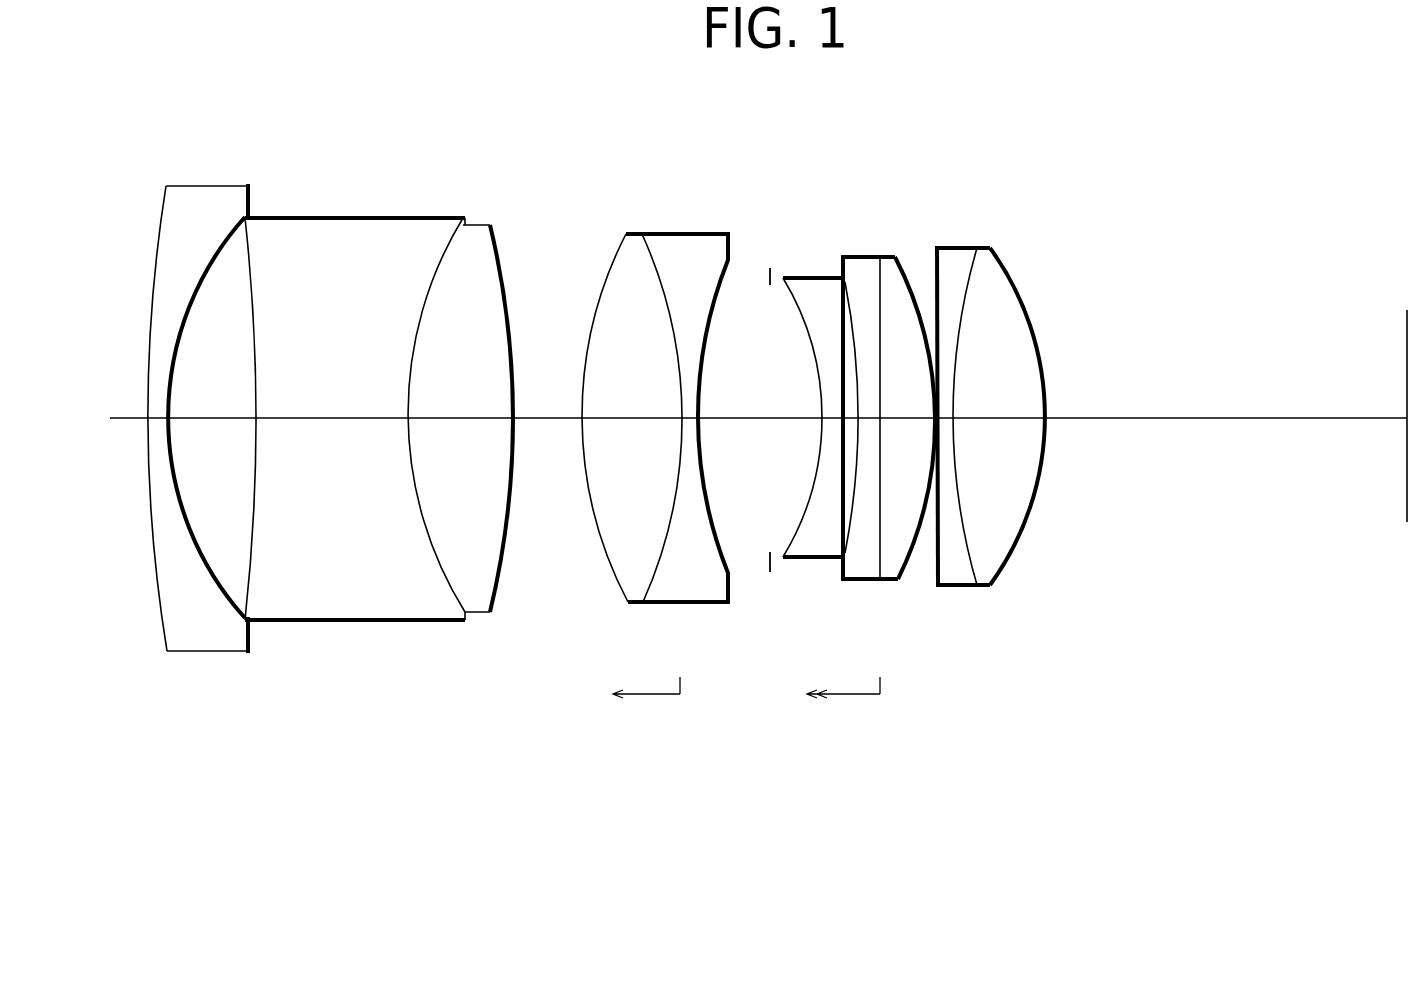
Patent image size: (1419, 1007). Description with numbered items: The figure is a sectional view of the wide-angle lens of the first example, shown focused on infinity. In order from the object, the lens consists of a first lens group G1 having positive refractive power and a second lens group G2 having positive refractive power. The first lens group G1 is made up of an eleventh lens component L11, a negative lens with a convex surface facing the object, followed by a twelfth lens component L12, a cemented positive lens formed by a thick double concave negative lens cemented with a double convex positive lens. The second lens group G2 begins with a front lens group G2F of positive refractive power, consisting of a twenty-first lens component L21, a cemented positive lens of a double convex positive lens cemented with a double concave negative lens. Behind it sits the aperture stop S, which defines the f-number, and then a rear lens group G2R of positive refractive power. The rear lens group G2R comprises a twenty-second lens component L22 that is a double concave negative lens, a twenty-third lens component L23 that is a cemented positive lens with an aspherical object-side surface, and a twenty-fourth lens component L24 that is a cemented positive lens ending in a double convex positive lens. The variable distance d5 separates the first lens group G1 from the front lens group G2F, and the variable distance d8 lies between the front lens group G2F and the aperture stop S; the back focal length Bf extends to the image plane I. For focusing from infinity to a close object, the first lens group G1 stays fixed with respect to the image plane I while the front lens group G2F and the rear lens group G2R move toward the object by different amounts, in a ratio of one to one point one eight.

The 11 lens component L11 is at (198, 186).
The 12 lens component L12 is at (257, 208).
The 21 lens component L21 is at (618, 225).
The 22 lens component L22 is at (820, 278).
The 23 lens component L23 is at (838, 252).
The 24 lens component L24 is at (930, 249).
The aperture stop S is at (770, 268).
The image plane I is at (1407, 330).
The first lens group G1 is at (511, 748).
The second lens group G2 is at (563, 748).
The front lens group G2F is at (740, 623).
The rear lens group G2R is at (1005, 623).
The variable distance at surface number 5 d5 is at (572, 422).
The variable distance at surface number 8 d8 is at (698, 418).
The back focal length Bf is at (1396, 422).